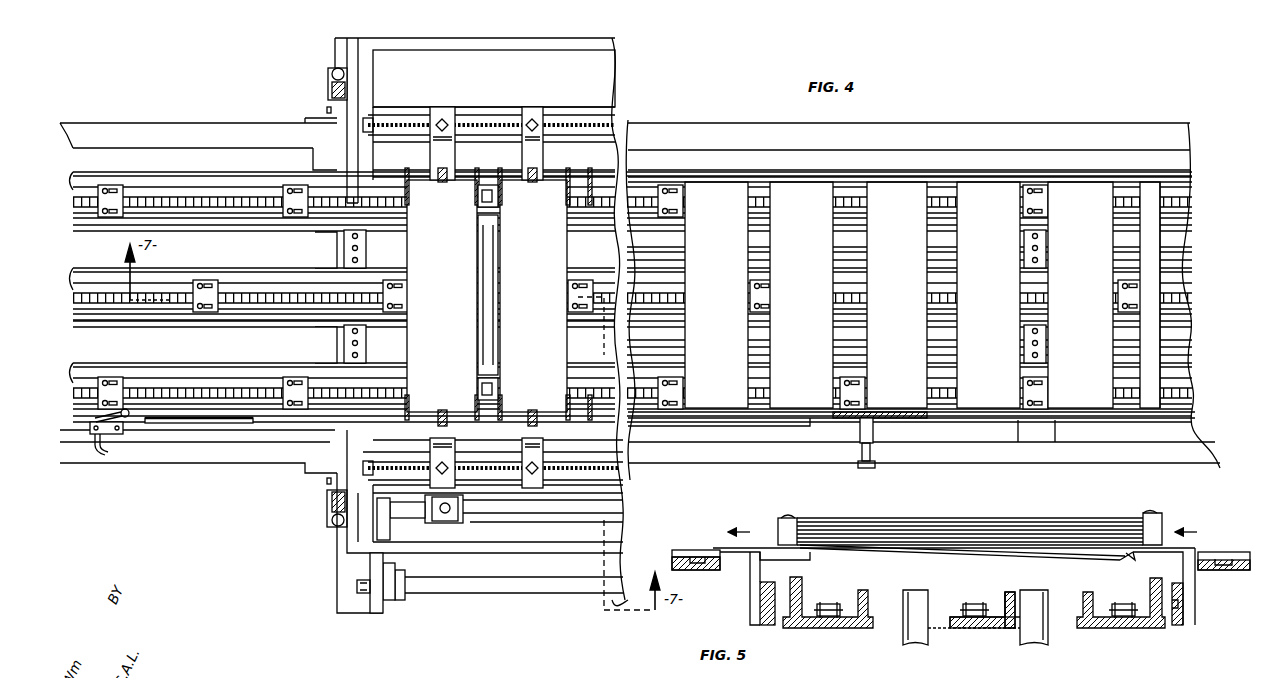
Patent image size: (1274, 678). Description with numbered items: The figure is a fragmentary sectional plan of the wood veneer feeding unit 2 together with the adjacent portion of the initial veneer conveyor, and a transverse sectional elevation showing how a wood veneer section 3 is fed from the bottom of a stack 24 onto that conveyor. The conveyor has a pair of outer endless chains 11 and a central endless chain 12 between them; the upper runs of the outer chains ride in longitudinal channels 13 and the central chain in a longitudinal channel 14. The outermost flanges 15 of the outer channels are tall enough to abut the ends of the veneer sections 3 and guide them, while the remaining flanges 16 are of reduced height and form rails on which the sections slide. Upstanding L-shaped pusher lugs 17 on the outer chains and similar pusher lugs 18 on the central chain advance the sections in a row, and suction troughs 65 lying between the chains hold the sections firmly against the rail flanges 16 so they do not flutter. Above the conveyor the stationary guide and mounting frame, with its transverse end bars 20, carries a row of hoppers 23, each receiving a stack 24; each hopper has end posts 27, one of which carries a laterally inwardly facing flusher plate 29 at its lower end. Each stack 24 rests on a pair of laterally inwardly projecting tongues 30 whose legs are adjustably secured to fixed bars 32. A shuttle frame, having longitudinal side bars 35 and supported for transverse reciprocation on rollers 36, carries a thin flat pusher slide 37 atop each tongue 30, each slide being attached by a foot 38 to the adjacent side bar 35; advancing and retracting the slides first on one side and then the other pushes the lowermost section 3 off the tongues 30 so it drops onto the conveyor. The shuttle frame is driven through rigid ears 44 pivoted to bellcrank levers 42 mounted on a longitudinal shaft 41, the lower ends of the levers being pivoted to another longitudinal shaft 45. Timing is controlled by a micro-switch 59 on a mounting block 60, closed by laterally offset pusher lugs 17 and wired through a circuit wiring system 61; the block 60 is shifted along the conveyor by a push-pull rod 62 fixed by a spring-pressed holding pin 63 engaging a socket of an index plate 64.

In FIG. 4, the wood veneer feeding unit 2 is at (457, 104).
In FIG. 4, the wood veneer sections 3 is at (510, 398).
In FIG. 5, the wood veneer sections 3 is at (1035, 548).
In FIG. 4, the outer endless chains 11 is at (172, 200).
In FIG. 5, the outer endless chains 11 is at (828, 604).
In FIG. 4, the central endless chain 12 is at (80, 290).
In FIG. 5, the central endless chain 12 is at (972, 604).
In FIG. 4, the longitudinal channels 13 is at (200, 215).
In FIG. 4, the longitudinal channel 14 is at (135, 315).
In FIG. 5, the outermost flanges 15 is at (1162, 598).
In FIG. 5, the flanges 16 is at (937, 594).
In FIG. 4, the pusher lugs 17 is at (295, 208).
In FIG. 4, the pusher lugs 18 is at (210, 285).
In FIG. 4, the transverse end bars 20 is at (360, 84).
In FIG. 4, the hoppers 23 is at (506, 176).
In FIG. 5, the hoppers 23 is at (805, 519).
In FIG. 5, the stack 24 is at (958, 520).
In FIG. 4, the end posts 27 is at (440, 184).
In FIG. 4, the flusher plate 29 is at (533, 184).
In FIG. 5, the tongues 30 is at (1152, 530).
In FIG. 5, the fixed bars 32 is at (760, 594).
In FIG. 4, the longitudinal side bars 35 is at (560, 107).
In FIG. 5, the longitudinal side bars 35 is at (686, 568).
In FIG. 4, the rollers 36 is at (334, 72).
In FIG. 4, the pusher slide 37 is at (541, 160).
In FIG. 5, the pusher slide 37 is at (760, 548).
In FIG. 5, the foot 38 is at (683, 550).
In FIG. 4, the longitudinal shaft 41 is at (460, 588).
In FIG. 4, the bellcrank levers 42 is at (388, 530).
In FIG. 4, the rigid ears 44 is at (375, 598).
In FIG. 4, the longitudinal shaft 45 is at (539, 513).
In FIG. 4, the micro-switch 59 is at (110, 438).
In FIG. 4, the mounting block 60 is at (145, 436).
In FIG. 4, the circuit wiring system 61 is at (95, 452).
In FIG. 4, the push-pull rod 62 is at (220, 425).
In FIG. 4, the spring-pressed holding pin 63 is at (872, 463).
In FIG. 4, the index plate 64 is at (868, 412).
In FIG. 4, the suction troughs 65 is at (480, 335).
In FIG. 5, the suction troughs 65 is at (1036, 600).